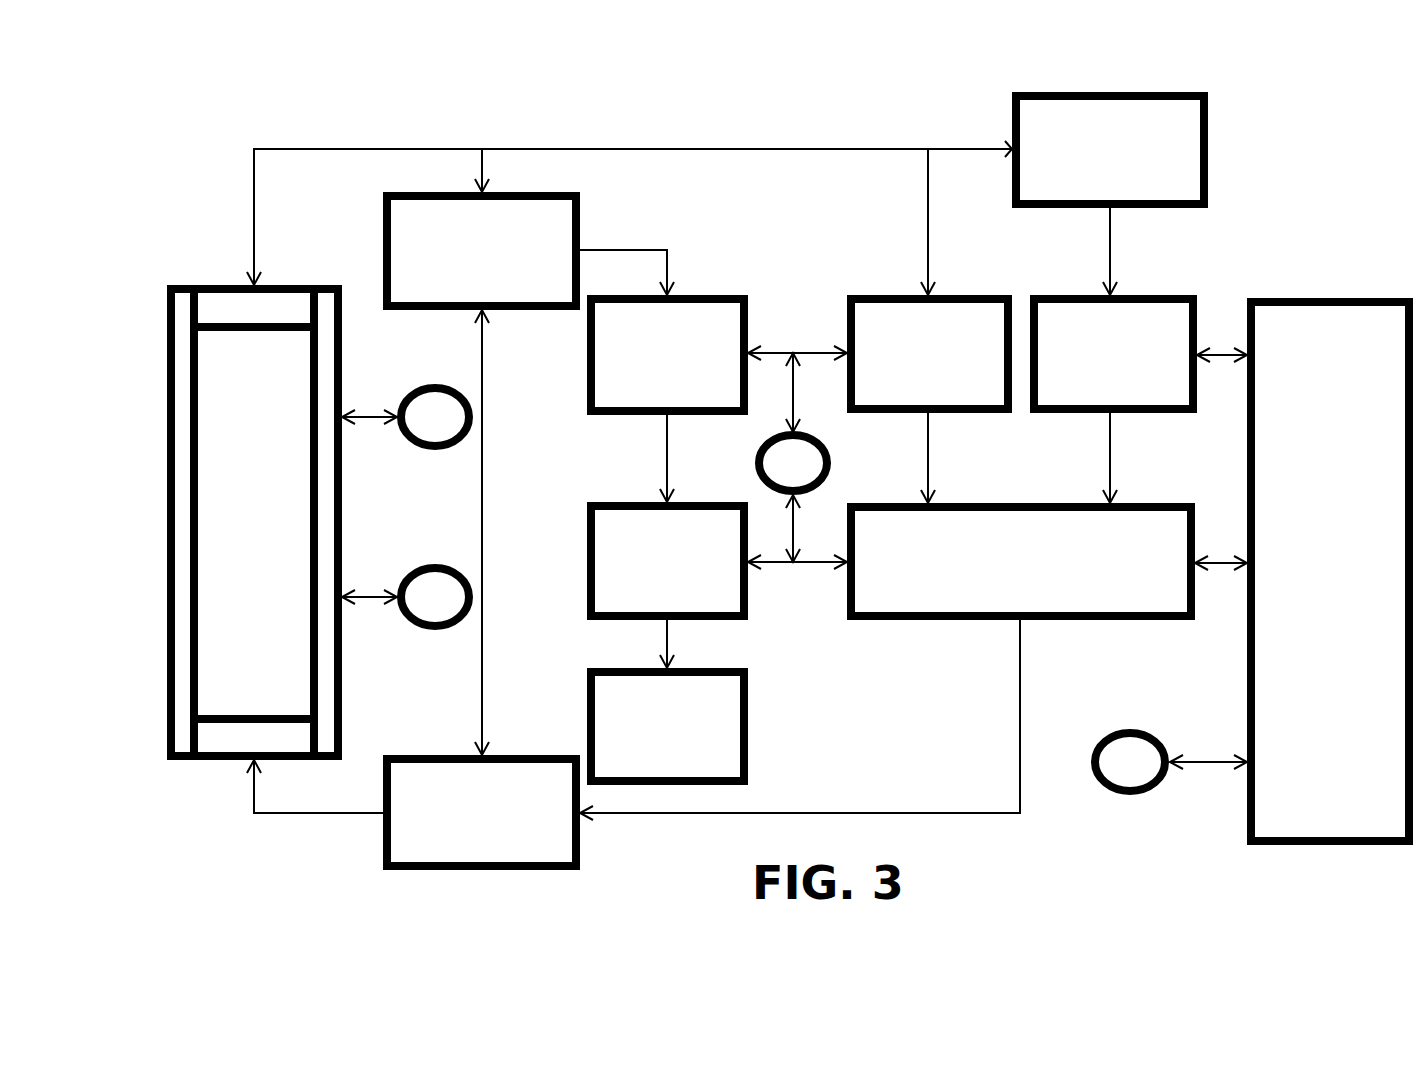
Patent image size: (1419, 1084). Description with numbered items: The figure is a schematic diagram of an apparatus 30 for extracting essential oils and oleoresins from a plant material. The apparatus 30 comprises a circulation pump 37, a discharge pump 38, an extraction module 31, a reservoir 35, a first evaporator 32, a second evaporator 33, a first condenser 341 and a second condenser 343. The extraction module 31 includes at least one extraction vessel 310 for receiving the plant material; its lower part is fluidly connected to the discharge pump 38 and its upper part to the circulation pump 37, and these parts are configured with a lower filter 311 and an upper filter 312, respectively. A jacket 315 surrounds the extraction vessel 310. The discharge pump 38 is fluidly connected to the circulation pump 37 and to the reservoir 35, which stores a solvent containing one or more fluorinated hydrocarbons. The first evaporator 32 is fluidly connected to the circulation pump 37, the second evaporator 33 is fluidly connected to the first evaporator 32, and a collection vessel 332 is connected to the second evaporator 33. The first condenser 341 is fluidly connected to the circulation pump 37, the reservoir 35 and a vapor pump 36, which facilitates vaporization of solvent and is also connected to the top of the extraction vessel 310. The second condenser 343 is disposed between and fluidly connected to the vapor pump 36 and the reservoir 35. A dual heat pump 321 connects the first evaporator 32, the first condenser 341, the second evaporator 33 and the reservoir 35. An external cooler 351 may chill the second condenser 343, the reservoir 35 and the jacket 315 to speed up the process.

The apparatus 30 is at (172, 147).
The extraction module 31 is at (167, 402).
The extraction vessel 310 is at (167, 522).
The lower filter 311 is at (252, 735).
The upper filter 312 is at (276, 305).
The jacket 315 is at (327, 680).
The first evaporator 32 is at (637, 358).
The heat pump 321 is at (832, 462).
The second evaporator 33 is at (628, 565).
The collection vessel 332 is at (710, 713).
The first condenser 341 is at (950, 327).
The second condenser 343 is at (1153, 318).
The reservoir 35 is at (983, 590).
The external cooler 351 is at (1300, 327).
The vapor pump 36 is at (1170, 160).
The circulation pump 37 is at (542, 232).
The discharge pump 38 is at (487, 843).